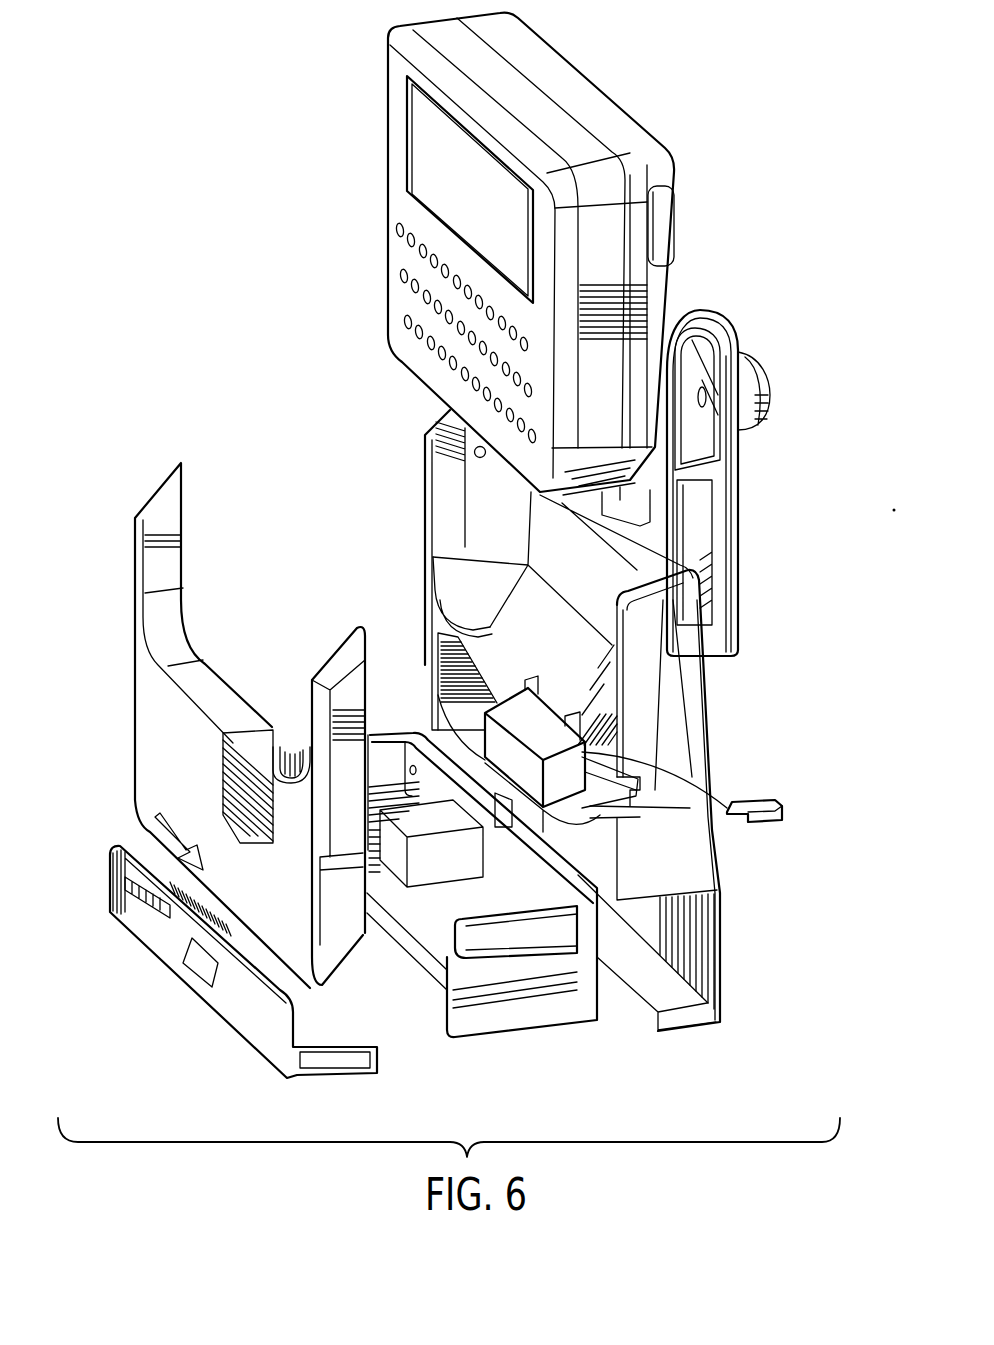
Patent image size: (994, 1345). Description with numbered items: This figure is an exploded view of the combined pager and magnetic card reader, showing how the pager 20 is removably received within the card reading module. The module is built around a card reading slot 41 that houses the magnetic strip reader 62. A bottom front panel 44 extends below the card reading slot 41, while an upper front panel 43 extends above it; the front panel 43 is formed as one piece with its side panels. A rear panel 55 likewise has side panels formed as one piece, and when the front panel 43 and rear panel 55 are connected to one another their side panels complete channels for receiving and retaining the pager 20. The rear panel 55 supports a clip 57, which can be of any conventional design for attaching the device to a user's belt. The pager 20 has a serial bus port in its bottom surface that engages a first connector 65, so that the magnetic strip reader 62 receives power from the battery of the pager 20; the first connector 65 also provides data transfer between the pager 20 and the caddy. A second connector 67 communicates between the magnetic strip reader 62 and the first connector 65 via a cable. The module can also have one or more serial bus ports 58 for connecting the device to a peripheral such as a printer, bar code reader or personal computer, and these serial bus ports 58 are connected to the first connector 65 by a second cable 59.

The pager 20 is at (617, 93).
The card reading slot 41 is at (452, 1040).
The upper front panel 43 is at (128, 736).
The bottom front panel 44 is at (172, 963).
The rear panel 55 is at (726, 924).
The clip 57 is at (742, 655).
The serial bus port 58 is at (760, 823).
The second cable 59 is at (727, 805).
The magnetic strip reader 62 is at (498, 1024).
The first connector 65 is at (530, 688).
The second connector 67 is at (484, 713).